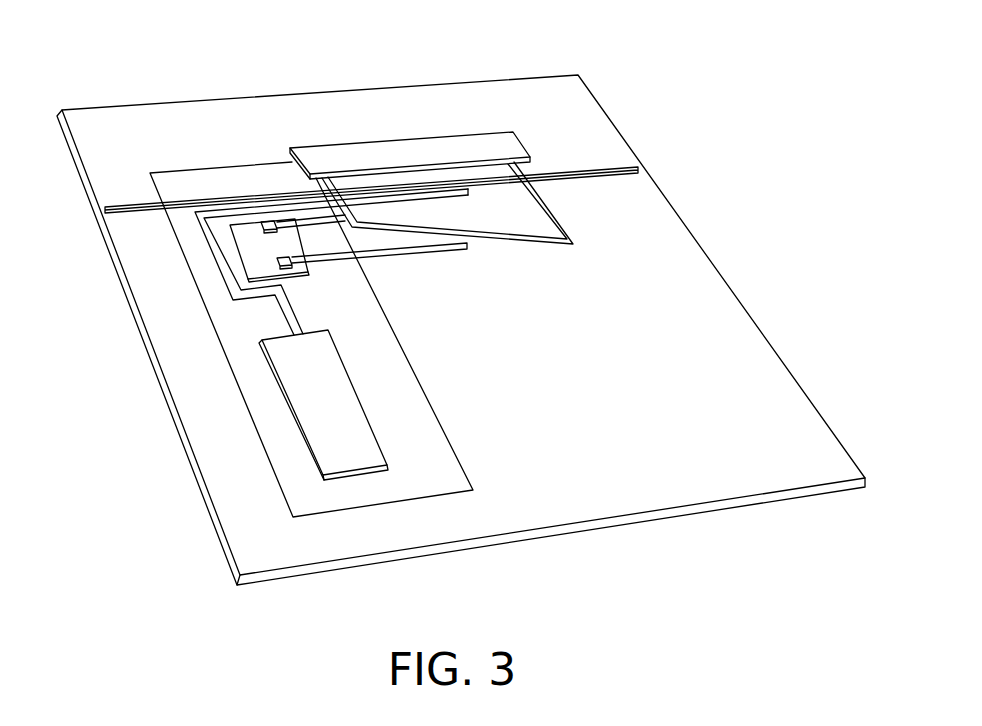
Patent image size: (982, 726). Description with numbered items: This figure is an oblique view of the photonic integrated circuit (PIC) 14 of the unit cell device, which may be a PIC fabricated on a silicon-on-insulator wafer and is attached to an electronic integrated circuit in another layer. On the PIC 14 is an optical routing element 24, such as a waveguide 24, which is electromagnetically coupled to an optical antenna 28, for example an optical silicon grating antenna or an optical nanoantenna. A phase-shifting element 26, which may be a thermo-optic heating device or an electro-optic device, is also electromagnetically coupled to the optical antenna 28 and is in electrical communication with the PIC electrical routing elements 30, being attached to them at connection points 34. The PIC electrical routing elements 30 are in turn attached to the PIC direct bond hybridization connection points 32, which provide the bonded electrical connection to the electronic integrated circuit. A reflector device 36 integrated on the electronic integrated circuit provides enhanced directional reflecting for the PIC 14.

The photonic integrated circuit 14 is at (279, 75).
The optical routing element 24 is at (133, 205).
The phase-shifting element 26 is at (300, 247).
The optical antenna 28 is at (357, 385).
The PIC electrical routing elements 30 is at (357, 198).
The PIC direct bond hybridization connection points 32 is at (300, 147).
The connection points 34 is at (250, 226).
The reflector device 36 is at (474, 491).